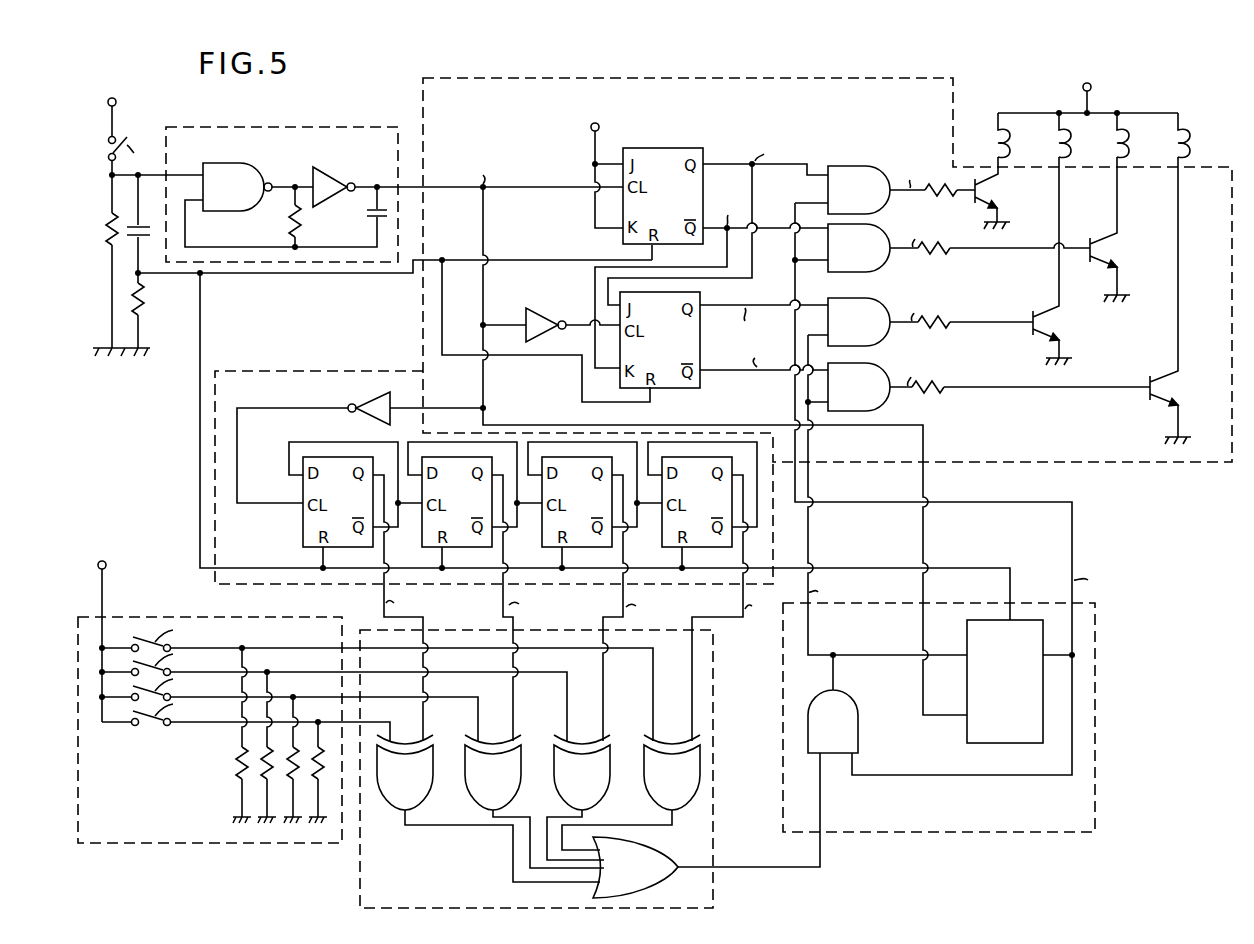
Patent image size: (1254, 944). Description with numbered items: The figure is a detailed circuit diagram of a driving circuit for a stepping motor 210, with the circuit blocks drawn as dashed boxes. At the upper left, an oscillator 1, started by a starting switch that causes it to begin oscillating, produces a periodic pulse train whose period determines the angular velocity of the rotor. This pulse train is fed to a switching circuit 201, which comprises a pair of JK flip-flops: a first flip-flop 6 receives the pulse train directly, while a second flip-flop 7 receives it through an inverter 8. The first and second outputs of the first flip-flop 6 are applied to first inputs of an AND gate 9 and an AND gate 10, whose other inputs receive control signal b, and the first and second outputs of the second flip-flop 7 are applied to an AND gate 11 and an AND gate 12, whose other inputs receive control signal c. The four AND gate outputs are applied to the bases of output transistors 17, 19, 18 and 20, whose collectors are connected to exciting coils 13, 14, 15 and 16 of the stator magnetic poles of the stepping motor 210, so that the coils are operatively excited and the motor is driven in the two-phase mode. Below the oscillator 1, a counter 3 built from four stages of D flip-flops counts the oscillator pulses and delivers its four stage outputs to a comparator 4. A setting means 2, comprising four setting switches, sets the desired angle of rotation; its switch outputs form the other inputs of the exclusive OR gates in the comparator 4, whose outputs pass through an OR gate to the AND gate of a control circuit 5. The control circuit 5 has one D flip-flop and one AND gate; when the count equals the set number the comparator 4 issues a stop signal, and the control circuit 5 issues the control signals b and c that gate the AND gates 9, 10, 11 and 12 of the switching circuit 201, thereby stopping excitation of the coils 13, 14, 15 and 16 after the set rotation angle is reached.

The oscillator 1 is at (343, 127).
The setting means 2 is at (140, 616).
The counter 3 is at (298, 369).
The comparator 4 is at (358, 868).
The control circuit 5 is at (1098, 650).
The first flip-flop 6 is at (687, 148).
The second flip-flop 7 is at (700, 383).
The inverter 8 is at (543, 314).
The AND gate 9 is at (861, 167).
The AND gate 10 is at (881, 231).
The AND gate 11 is at (872, 299).
The AND gate 12 is at (873, 364).
The exciting coil 13 is at (992, 146).
The exciting coil 14 is at (1053, 146).
The exciting coil 15 is at (1111, 146).
The exciting coil 16 is at (1172, 148).
The output transistor 17 is at (989, 194).
The output transistor 18 is at (1050, 327).
The output transistor 19 is at (1107, 250).
The output transistor 20 is at (1170, 395).
The switching circuit 201 is at (672, 87).
The stepping motor 210 is at (1102, 262).